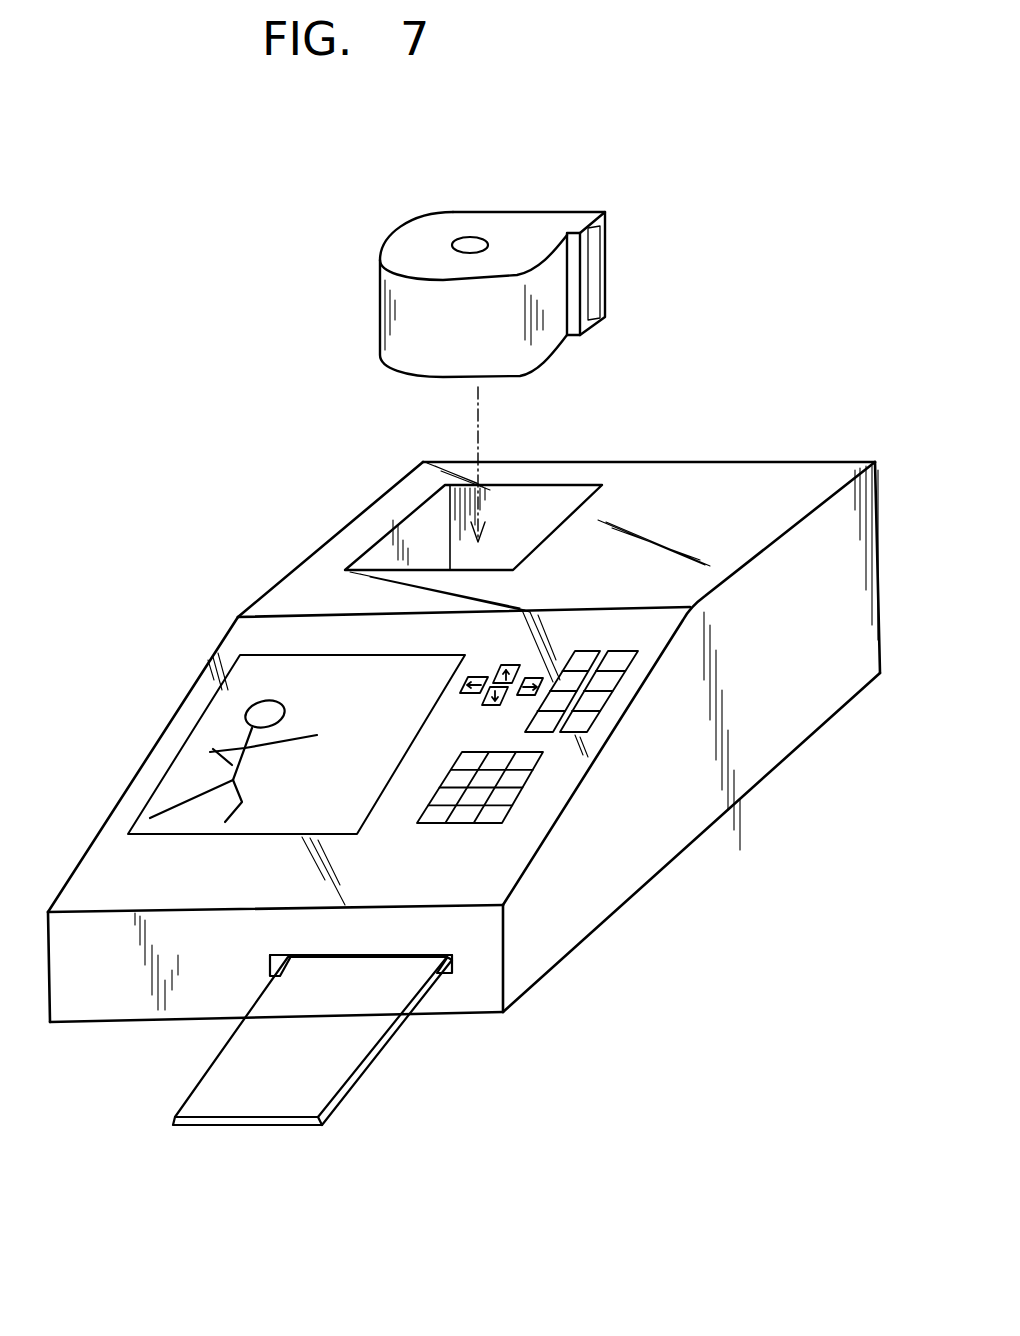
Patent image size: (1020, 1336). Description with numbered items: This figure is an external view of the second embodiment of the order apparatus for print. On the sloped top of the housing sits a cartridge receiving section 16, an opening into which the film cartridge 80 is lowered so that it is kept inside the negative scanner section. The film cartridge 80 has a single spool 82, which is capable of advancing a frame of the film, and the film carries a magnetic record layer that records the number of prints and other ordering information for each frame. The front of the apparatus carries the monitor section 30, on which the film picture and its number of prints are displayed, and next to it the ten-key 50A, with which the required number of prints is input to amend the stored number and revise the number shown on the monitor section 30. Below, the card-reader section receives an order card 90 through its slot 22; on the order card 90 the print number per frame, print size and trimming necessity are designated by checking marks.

The film cartridge 80 is at (515, 222).
The spool 82 is at (473, 245).
The cartridge receiving section 16 is at (425, 537).
The monitor section 30 is at (195, 757).
The ten-key 50A is at (507, 795).
The slot 22 is at (440, 975).
The order card 90 is at (292, 1100).